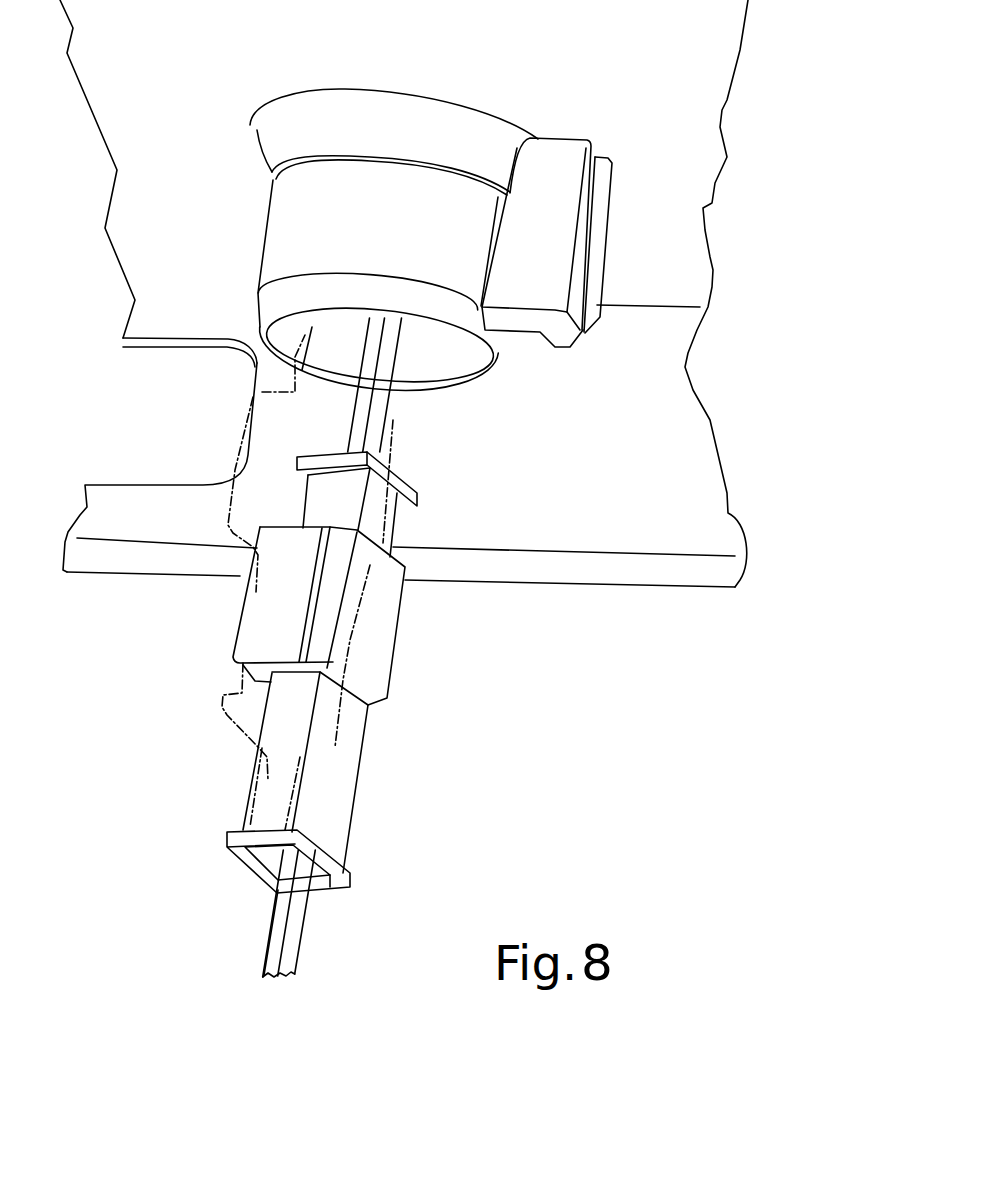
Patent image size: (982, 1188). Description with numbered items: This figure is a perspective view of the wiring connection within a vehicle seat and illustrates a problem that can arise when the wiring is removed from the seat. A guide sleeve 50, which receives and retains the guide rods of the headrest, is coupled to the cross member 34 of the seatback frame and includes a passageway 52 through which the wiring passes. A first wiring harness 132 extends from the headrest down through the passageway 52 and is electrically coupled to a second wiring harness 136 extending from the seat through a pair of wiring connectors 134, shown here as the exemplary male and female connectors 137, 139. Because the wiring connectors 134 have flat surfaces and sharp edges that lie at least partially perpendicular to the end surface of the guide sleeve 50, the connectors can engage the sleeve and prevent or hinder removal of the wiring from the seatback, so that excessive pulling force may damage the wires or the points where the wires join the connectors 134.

The cross member 34 is at (148, 523).
The guide sleeve 50 is at (542, 240).
The passageway 52 is at (437, 370).
The first wiring harness 132 is at (385, 400).
The wiring connector 134 is at (410, 625).
The second wiring harness 136 is at (300, 918).
The connector 137 is at (383, 600).
The connector 139 is at (343, 780).